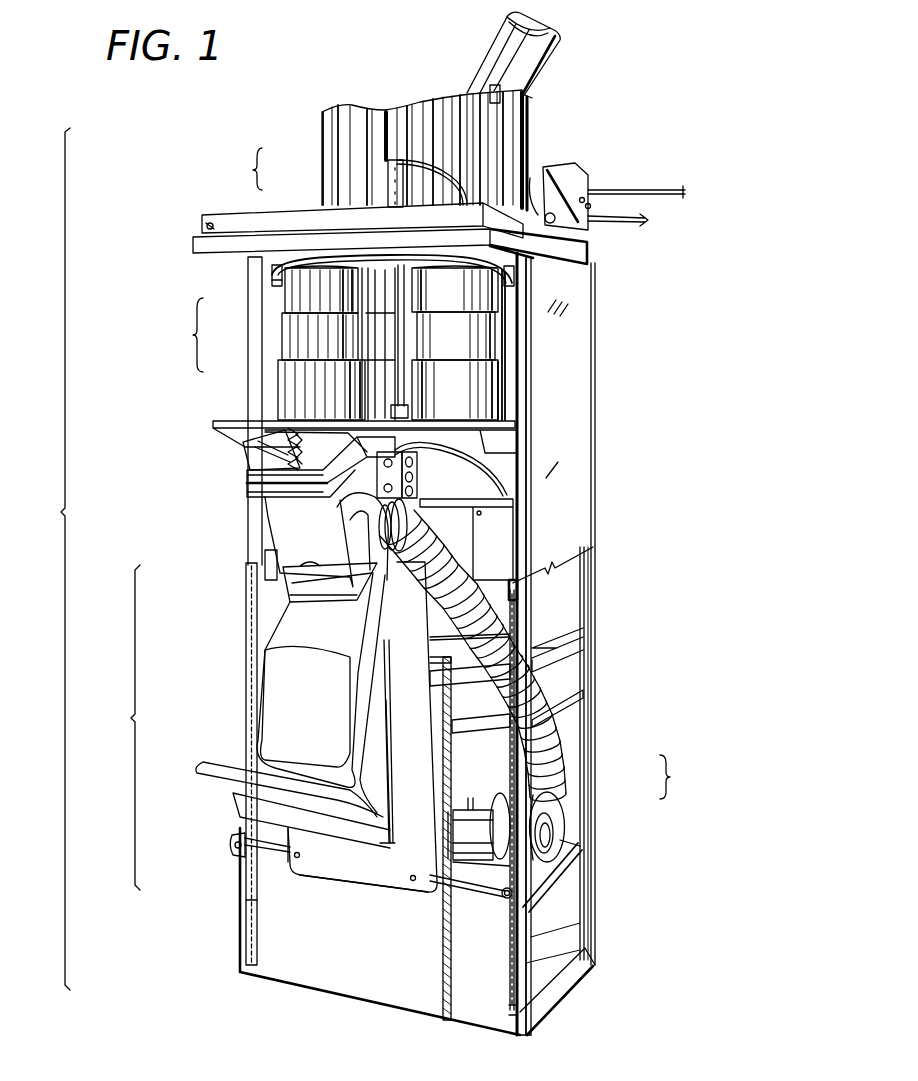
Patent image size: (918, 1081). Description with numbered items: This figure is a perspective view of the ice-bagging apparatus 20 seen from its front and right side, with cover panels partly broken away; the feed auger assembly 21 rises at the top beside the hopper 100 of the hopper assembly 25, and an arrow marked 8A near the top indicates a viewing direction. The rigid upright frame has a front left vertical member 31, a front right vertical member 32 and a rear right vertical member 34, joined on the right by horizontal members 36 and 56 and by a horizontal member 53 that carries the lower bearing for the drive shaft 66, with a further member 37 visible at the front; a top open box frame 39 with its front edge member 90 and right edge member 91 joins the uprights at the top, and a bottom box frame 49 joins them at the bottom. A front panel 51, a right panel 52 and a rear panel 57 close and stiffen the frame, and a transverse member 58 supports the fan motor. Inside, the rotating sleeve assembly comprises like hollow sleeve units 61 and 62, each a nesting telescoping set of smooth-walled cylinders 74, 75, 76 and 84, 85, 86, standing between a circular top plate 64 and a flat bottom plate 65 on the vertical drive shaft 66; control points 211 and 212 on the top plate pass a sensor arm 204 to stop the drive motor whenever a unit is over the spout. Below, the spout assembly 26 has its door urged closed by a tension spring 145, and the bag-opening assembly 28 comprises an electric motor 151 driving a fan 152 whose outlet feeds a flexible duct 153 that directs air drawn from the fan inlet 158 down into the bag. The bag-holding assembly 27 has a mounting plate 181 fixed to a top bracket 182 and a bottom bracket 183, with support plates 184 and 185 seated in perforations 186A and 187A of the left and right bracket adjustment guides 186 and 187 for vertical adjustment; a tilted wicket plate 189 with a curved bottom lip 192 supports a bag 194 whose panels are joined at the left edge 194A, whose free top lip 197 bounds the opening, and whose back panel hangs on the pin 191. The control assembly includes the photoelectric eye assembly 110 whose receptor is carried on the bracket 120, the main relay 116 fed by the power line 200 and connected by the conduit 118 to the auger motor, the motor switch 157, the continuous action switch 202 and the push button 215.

The viewing direction of FIG. 8A is at (414, 52).
The apparatus 20 is at (51, 559).
The feed auger assembly 21 is at (553, 79).
The hopper assembly 25 is at (244, 169).
The spout assembly 26 is at (236, 501).
The bag holding assembly 27 is at (121, 727).
The bag-opening assembly 28 is at (677, 777).
The front left vertical member 31 is at (255, 402).
The front right vertical member 32 is at (527, 1022).
The rear right vertical member 34 is at (586, 733).
The horizontal member 36 is at (584, 652).
The cross member 37 is at (478, 734).
The top box frame 39 is at (196, 243).
The bottom box frame 49 is at (552, 998).
The front panel 51 is at (345, 982).
The right panel 52 is at (595, 440).
The horizontal member 53 is at (583, 630).
The horizontal member 56 is at (583, 697).
The rear panel 57 is at (562, 925).
The transverse member 58 is at (565, 886).
The sleeve unit 61 is at (186, 335).
The sleeve unit 62 is at (495, 393).
The top plate 64 is at (512, 268).
The bottom plate 65 is at (515, 424).
The drive shaft 66 is at (398, 323).
The cylinder 74 is at (300, 300).
The cylinder 75 is at (300, 333).
The cylinder 76 is at (305, 383).
The cylinder 84 is at (458, 296).
The cylinder 85 is at (454, 345).
The cylinder 86 is at (463, 416).
The front edge member 90 is at (265, 222).
The right edge member 91 is at (590, 252).
The hopper 100 is at (322, 154).
The photoelectric eye assembly 110 is at (392, 178).
The relay 116 is at (587, 180).
The conduit 118 is at (670, 196).
The bracket 120 is at (397, 198).
The tension spring 145 is at (250, 462).
The electric motor 151 is at (485, 812).
The fan 152 is at (550, 833).
The flexible duct 153 is at (560, 757).
The motor switch 157 is at (206, 226).
The fan inlet 158 is at (582, 848).
The mounting plate 181 is at (352, 862).
The mounting plate top bracket 182 is at (480, 685).
The mounting plate bottom bracket 183 is at (275, 852).
The bracket support plate 184 is at (208, 861).
The bracket support plate 185 is at (505, 908).
The left bracket adjustment guide 186 is at (246, 628).
The perforations 186A is at (246, 948).
The right bracket guide 187 is at (517, 602).
The perforations 187A is at (505, 1015).
The wicket plate 189 is at (388, 792).
The pin 191 is at (387, 570).
The bottom lip 192 is at (213, 784).
The bag 194 is at (465, 586).
The left edge 194A is at (262, 667).
The top lip 197 is at (290, 567).
The main electric power line 200 is at (635, 226).
The continuous action switch 202 is at (417, 470).
The sensor arm 204 is at (272, 272).
The control point 211 is at (272, 282).
The control point 212 is at (512, 285).
The button 215 is at (480, 502).